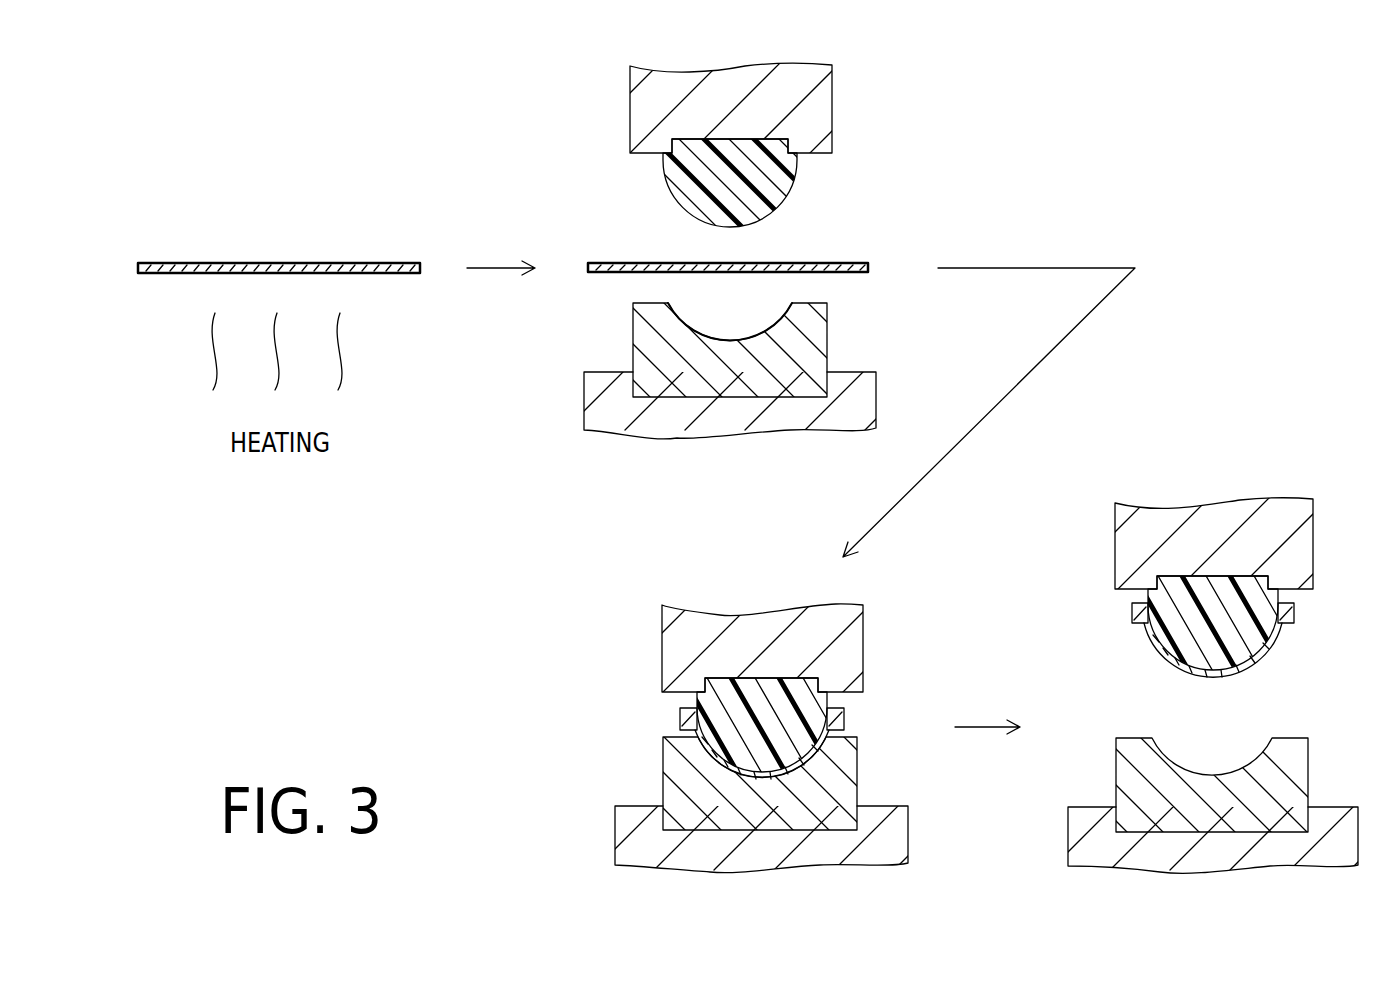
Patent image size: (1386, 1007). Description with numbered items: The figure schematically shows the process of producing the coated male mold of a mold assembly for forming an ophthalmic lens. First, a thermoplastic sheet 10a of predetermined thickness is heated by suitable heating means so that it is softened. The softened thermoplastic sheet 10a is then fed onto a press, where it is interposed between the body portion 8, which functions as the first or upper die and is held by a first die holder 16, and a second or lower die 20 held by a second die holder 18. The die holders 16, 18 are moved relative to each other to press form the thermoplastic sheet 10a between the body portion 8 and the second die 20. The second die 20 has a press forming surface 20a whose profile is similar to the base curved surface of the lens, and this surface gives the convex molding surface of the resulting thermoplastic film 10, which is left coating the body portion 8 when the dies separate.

The body portion 8 is at (787, 194).
The thermoplastic film 10 is at (747, 771).
The thermoplastic sheet 10a is at (190, 262).
The first die holder 16 is at (641, 111).
The second die holder 18 is at (590, 387).
The second die 20 is at (813, 330).
The press forming surface 20a is at (680, 318).